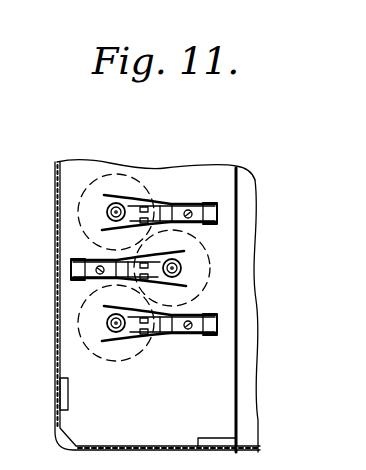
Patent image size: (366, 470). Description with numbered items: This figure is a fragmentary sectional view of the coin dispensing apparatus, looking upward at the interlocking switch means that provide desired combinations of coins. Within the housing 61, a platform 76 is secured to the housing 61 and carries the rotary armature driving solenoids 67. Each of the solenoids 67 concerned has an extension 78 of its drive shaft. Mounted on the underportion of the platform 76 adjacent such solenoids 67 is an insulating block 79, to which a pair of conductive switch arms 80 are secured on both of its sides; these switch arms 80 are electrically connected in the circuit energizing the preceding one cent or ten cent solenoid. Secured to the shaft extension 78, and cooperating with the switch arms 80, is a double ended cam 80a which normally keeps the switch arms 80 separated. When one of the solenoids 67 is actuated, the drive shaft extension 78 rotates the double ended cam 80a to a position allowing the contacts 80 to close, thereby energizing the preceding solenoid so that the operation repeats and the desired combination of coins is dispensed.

The housing 61 is at (53, 377).
The driving solenoid 67 is at (97, 173).
The platform 76 is at (208, 402).
The extension of the drive shaft 78 is at (117, 210).
The insulating block 79 is at (217, 208).
The conductive switch arms 80 is at (163, 205).
The double ended cam 80a is at (107, 213).